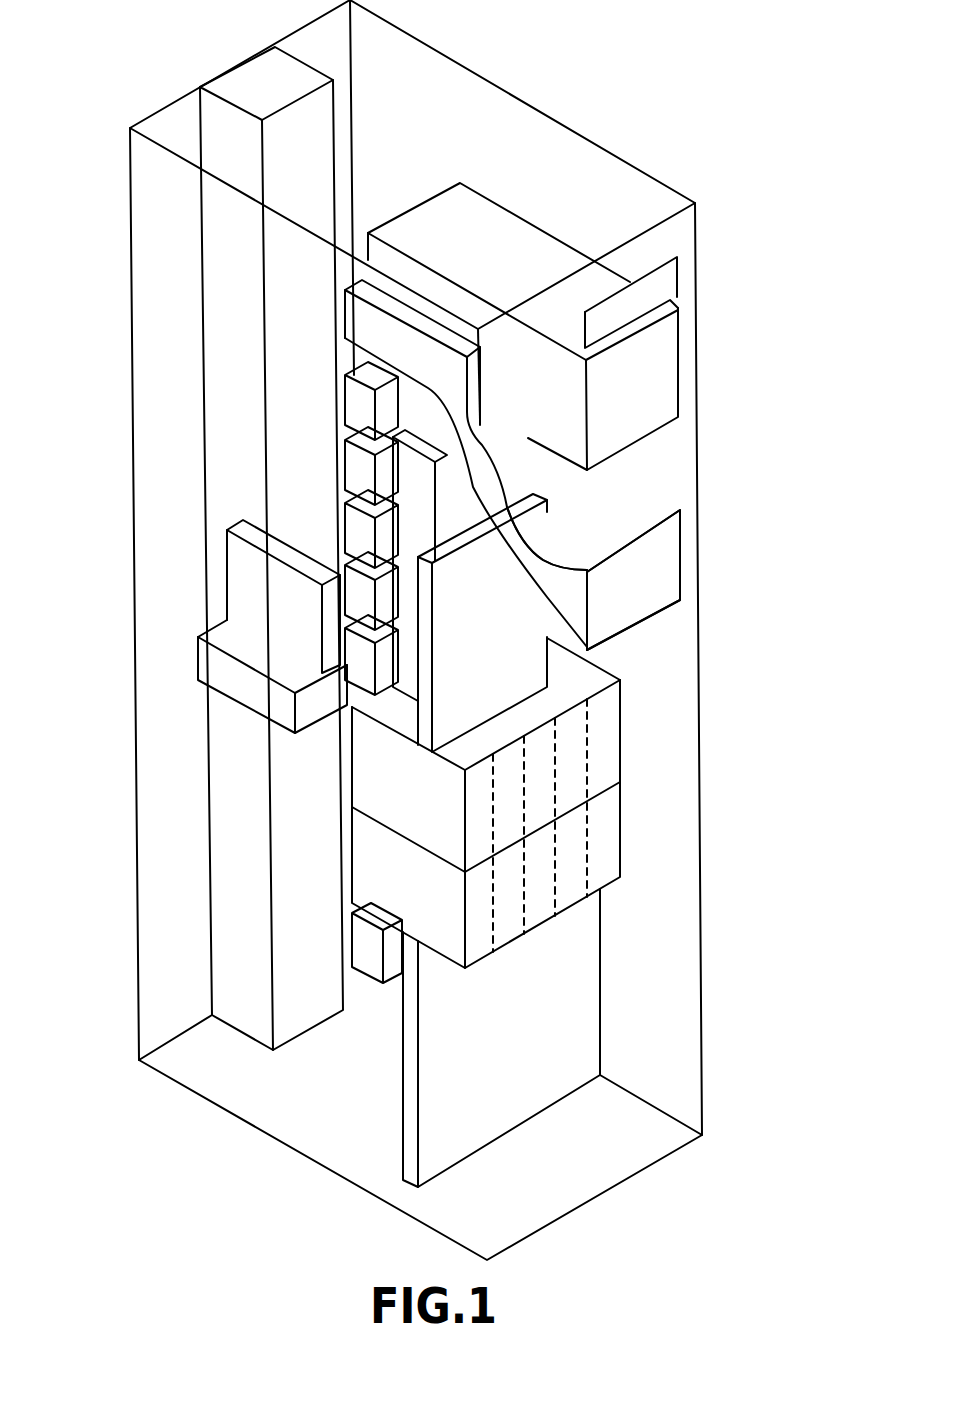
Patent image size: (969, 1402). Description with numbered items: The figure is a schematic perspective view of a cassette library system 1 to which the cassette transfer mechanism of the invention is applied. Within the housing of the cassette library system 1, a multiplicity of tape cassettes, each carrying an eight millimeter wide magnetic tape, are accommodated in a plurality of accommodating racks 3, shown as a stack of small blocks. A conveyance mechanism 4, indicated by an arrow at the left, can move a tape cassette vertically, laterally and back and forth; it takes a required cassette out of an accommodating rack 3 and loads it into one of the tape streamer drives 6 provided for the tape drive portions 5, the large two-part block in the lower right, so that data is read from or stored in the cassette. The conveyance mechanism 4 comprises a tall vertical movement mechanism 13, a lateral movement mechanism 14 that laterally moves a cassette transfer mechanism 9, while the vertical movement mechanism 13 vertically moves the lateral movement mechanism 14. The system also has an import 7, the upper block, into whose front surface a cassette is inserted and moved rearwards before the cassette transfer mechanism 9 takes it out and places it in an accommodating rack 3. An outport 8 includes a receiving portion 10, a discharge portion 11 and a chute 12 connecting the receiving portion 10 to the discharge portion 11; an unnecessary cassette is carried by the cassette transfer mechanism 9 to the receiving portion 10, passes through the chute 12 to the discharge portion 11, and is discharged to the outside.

The cassette library system 1 is at (625, 108).
The accommodating racks 3 is at (357, 403).
The conveyance mechanism 4 is at (160, 565).
The tape drive portions 5 is at (622, 752).
The tape streamer drives 6 is at (573, 735).
The import 7 is at (652, 388).
The outport 8 is at (680, 553).
The cassette transfer mechanism 9 is at (255, 597).
The receiving portion 10 is at (393, 307).
The discharge portion 11 is at (627, 593).
The chute 12 is at (543, 530).
The vertical movement mechanism 13 is at (228, 305).
The lateral movement mechanism 14 is at (245, 688).